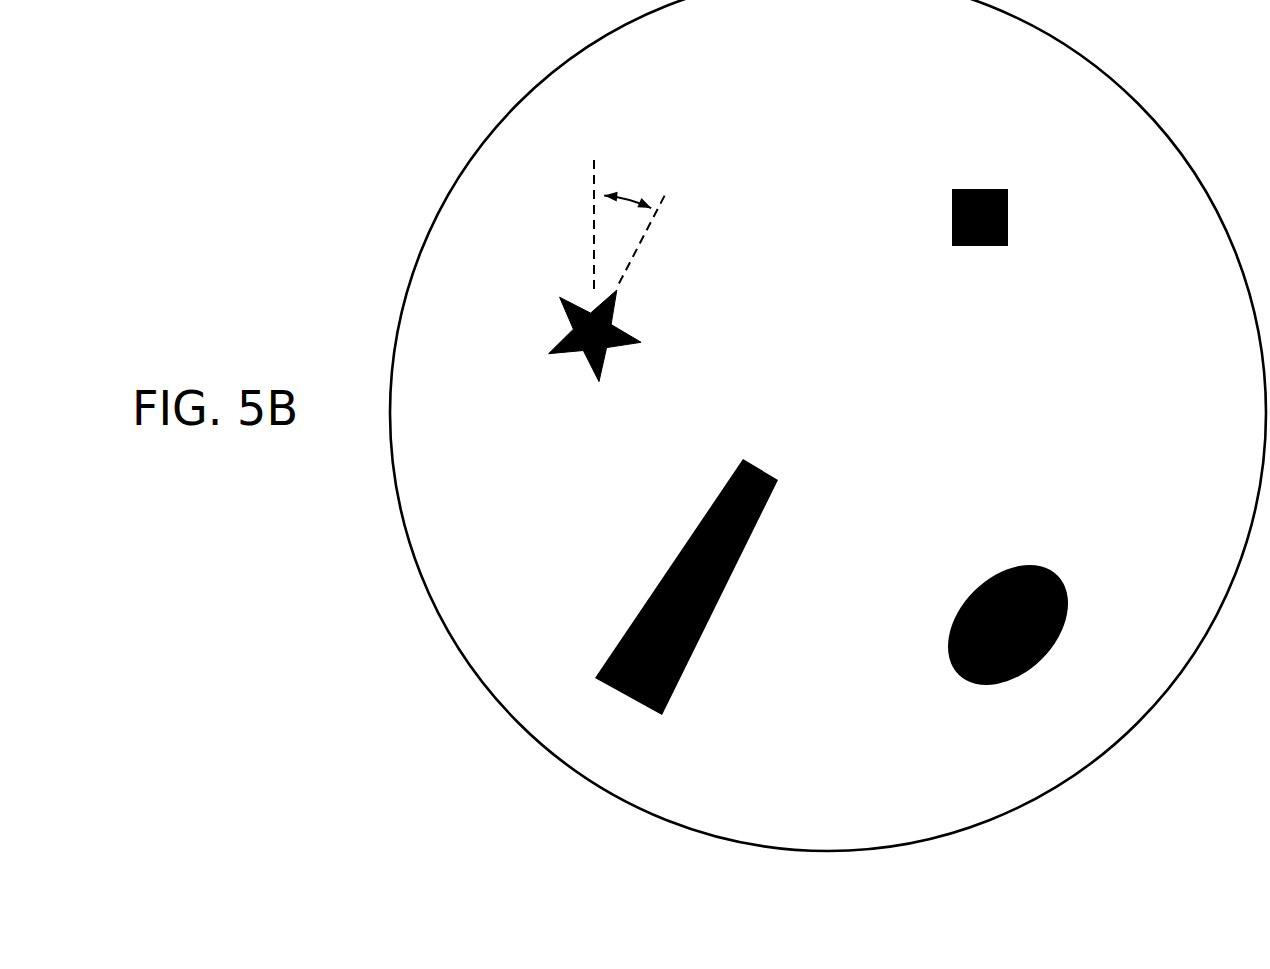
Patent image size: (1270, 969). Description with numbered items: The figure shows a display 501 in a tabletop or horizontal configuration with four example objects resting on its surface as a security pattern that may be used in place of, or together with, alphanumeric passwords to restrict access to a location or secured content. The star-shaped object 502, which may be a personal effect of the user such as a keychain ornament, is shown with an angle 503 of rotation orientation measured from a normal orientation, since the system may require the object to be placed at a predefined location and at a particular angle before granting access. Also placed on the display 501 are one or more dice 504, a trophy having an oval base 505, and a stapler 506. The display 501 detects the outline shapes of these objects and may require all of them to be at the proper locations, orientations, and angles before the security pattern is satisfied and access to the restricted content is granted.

The display 501 is at (786, 425).
The star-shaped object 502 is at (557, 311).
The angle of rotation orientation 503 is at (693, 224).
The dice 504 is at (1031, 183).
The trophy having an oval base 505 is at (1045, 625).
The stapler 506 is at (667, 597).